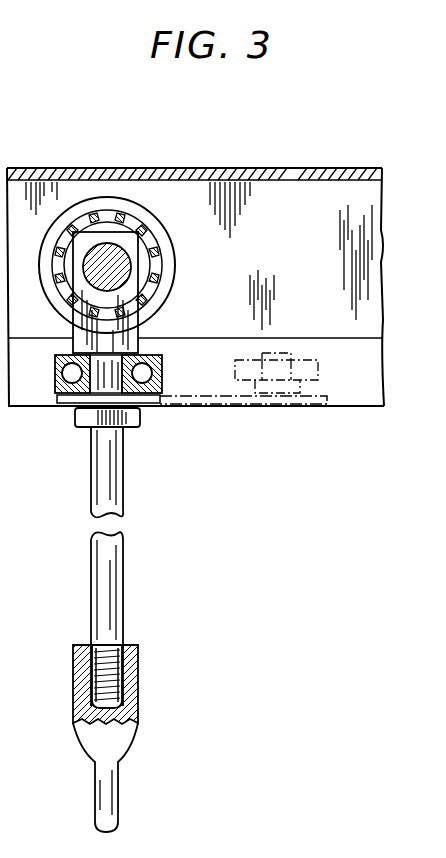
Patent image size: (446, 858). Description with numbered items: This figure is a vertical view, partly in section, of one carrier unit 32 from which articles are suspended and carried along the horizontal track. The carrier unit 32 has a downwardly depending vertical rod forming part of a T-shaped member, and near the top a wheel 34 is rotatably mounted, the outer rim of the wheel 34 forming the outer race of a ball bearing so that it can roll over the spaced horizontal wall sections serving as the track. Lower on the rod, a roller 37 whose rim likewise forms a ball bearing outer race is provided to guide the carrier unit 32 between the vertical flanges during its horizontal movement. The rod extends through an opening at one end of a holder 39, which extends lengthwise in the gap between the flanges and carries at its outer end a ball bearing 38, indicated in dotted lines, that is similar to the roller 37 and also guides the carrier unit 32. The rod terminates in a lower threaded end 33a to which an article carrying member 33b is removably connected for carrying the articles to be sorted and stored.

The carrier unit 32 is at (86, 476).
The lower threaded end 33a is at (113, 668).
The article carrying member 33b is at (110, 805).
The wheel 34 is at (160, 241).
The roller 37 is at (162, 386).
The ball bearing 38 is at (320, 366).
The holder 39 is at (228, 410).